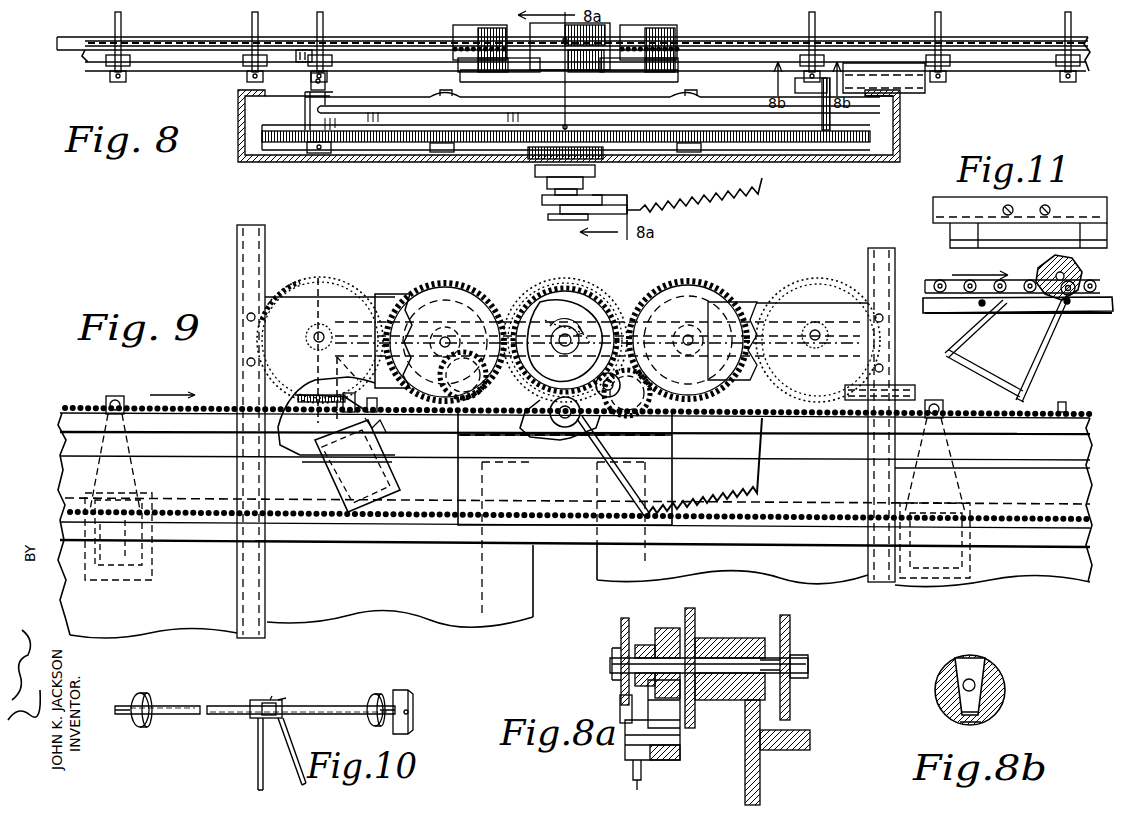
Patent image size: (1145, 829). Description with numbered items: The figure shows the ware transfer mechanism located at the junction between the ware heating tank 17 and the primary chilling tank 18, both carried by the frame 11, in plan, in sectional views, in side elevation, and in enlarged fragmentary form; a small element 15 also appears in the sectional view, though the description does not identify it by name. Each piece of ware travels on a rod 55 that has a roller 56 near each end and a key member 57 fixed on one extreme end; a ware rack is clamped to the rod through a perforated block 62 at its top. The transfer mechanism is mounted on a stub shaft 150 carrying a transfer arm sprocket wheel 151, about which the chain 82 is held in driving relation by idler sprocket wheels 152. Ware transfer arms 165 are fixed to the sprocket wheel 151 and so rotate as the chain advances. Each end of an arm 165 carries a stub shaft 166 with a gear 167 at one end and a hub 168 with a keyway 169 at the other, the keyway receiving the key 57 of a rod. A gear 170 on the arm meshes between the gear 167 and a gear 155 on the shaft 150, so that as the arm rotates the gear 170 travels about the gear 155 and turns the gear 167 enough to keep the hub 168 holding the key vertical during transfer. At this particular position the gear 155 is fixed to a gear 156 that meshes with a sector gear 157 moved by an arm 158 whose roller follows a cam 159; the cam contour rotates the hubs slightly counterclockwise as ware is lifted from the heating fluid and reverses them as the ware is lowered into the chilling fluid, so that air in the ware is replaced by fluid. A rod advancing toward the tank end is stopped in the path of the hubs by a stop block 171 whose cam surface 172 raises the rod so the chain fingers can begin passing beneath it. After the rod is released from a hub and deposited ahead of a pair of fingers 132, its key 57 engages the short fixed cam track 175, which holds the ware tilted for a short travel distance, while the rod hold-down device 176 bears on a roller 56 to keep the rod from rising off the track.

In FIG. 8, the frame 11 is at (1004, 86).
In FIG. 9, the frame 11 is at (60, 438).
In FIG. 8A, the pin 15 is at (641, 775).
In FIG. 9, the ware heating tank 17 is at (72, 472).
In FIG. 9, the primary chilling tank 18 is at (1046, 492).
In FIG. 10, the ware support rod 55 is at (312, 706).
In FIG. 11, the roller 56 is at (1080, 285).
In FIG. 10, the roller 56 is at (147, 694).
In FIG. 11, the key member 57 is at (1082, 266).
In FIG. 10, the key member 57 is at (412, 690).
In FIG. 8B, the key member 57 is at (977, 661).
In FIG. 10, the block 62 is at (270, 699).
In FIG. 9, the chain 82 is at (108, 400).
In FIG. 9, the fingers 132 is at (991, 482).
In FIG. 8, the stub shaft 150 is at (565, 212).
In FIG. 9, the stub shaft 150 is at (664, 300).
In FIG. 8A, the stub shaft 150 is at (806, 664).
In FIG. 8, the transfer arm sprocket wheel 151 is at (586, 40).
In FIG. 8A, the transfer arm sprocket wheel 151 is at (790, 626).
In FIG. 8, the idler sprocket wheel 152 is at (458, 36).
In FIG. 9, the idler sprocket wheel 152 is at (488, 398).
In FIG. 8, the gear 155 is at (520, 150).
In FIG. 9, the gear 155 is at (551, 290).
In FIG. 8A, the gear 155 is at (695, 626).
In FIG. 8, the gear 156 is at (605, 153).
In FIG. 9, the gear 156 is at (530, 318).
In FIG. 8A, the gear 156 is at (672, 640).
In FIG. 9, the sector gear 157 is at (550, 425).
In FIG. 8A, the sector gear 157 is at (680, 734).
In FIG. 9, the arm 158 is at (596, 432).
In FIG. 9, the cam 159 is at (612, 308).
In FIG. 8A, the cam 159 is at (620, 632).
In FIG. 8, the ware transfer arm 165 is at (360, 116).
In FIG. 9, the ware transfer arm 165 is at (362, 330).
In FIG. 8, the stub shaft 166 is at (322, 152).
In FIG. 9, the stub shaft 166 is at (329, 340).
In FIG. 8, the gear 167 is at (283, 143).
In FIG. 9, the gear 167 is at (300, 287).
In FIG. 8, the hub 168 is at (305, 96).
In FIG. 8B, the hub 168 is at (1003, 690).
In FIG. 8, the keyway 169 is at (311, 82).
In FIG. 8B, the keyway 169 is at (964, 720).
In FIG. 8, the gear 170 is at (412, 143).
In FIG. 9, the gear 170 is at (447, 300).
In FIG. 9, the stop block 171 is at (352, 416).
In FIG. 8, the cam surface 172 is at (302, 56).
In FIG. 9, the cam surface 172 is at (312, 437).
In FIG. 9, the cam track 175 is at (839, 439).
In FIG. 11, the cam track 175 is at (960, 315).
In FIG. 9, the rod hold-down device 176 is at (912, 397).
In FIG. 11, the rod hold-down device 176 is at (963, 248).